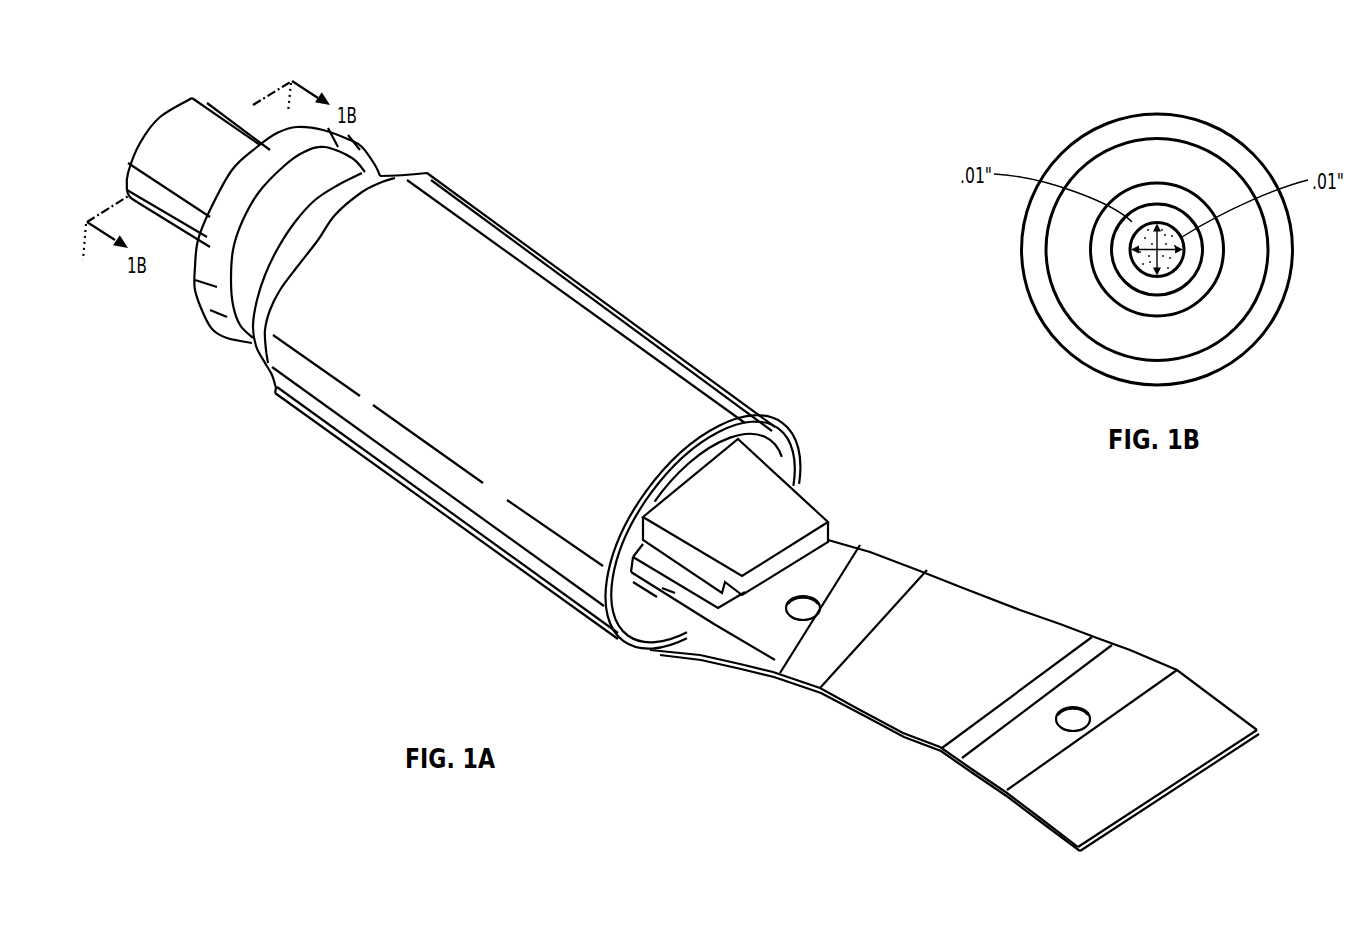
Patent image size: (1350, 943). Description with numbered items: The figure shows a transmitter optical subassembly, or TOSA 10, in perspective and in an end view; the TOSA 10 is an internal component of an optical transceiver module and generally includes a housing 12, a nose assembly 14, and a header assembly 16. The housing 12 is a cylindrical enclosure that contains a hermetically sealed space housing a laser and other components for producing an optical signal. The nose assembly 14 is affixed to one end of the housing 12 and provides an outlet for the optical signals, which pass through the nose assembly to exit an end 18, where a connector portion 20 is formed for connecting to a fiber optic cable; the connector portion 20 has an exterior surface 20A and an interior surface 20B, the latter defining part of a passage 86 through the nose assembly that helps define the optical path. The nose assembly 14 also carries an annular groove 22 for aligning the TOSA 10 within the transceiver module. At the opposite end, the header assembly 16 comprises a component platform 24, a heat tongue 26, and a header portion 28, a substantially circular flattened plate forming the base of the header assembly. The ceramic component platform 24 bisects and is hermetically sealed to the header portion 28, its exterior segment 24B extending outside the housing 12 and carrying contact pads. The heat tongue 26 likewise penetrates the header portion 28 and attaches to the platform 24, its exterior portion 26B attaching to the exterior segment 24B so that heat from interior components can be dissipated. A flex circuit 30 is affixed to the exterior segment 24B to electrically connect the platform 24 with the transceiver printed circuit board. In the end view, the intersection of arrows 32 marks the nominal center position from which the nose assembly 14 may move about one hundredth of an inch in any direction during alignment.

In FIG. 1A, the transmitter optical subassembly (TOSA) 10 is at (522, 158).
In FIG. 1B, the transmitter optical subassembly (TOSA) 10 is at (1028, 141).
In FIG. 1A, the TOSA housing 12 is at (522, 382).
In FIG. 1B, the TOSA housing 12 is at (1088, 128).
In FIG. 1A, the nose assembly 14 is at (172, 268).
In FIG. 1B, the nose assembly 14 is at (1222, 368).
In FIG. 1A, the header assembly 16 is at (822, 465).
In FIG. 1A, the end of the nose assembly 18 is at (198, 149).
In FIG. 1B, the end of the nose assembly 18 is at (1106, 271).
In FIG. 1A, the connector portion 20 is at (282, 128).
In FIG. 1B, the connector portion 20 is at (1068, 252).
In FIG. 1A, the exterior surface of the connector portion 20A is at (208, 171).
In FIG. 1B, the exterior surface of the connector portion 20A is at (1180, 232).
In FIG. 1B, the interior surface of the connector portion 20B is at (1174, 224).
In FIG. 1A, the annular groove 22 is at (254, 262).
In FIG. 1A, the component platform 24 is at (669, 636).
In FIG. 1A, the exterior segment of the component platform 24B is at (676, 590).
In FIG. 1A, the heat tongue 26 is at (764, 517).
In FIG. 1A, the exterior portion of the heat tongue 26B is at (753, 544).
In FIG. 1A, the header portion 28 is at (763, 443).
In FIG. 1A, the flex circuit 30 is at (959, 684).
In FIG. 1B, the arrows 32 is at (1135, 272).
In FIG. 1B, the passage 86 is at (1186, 282).